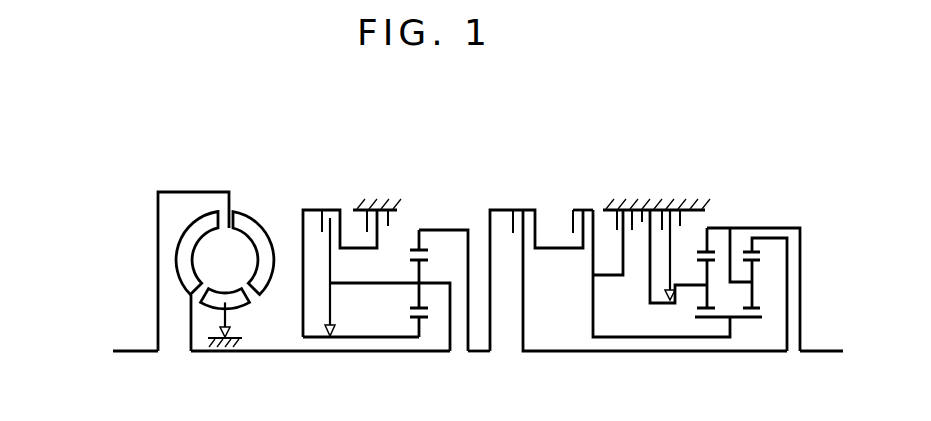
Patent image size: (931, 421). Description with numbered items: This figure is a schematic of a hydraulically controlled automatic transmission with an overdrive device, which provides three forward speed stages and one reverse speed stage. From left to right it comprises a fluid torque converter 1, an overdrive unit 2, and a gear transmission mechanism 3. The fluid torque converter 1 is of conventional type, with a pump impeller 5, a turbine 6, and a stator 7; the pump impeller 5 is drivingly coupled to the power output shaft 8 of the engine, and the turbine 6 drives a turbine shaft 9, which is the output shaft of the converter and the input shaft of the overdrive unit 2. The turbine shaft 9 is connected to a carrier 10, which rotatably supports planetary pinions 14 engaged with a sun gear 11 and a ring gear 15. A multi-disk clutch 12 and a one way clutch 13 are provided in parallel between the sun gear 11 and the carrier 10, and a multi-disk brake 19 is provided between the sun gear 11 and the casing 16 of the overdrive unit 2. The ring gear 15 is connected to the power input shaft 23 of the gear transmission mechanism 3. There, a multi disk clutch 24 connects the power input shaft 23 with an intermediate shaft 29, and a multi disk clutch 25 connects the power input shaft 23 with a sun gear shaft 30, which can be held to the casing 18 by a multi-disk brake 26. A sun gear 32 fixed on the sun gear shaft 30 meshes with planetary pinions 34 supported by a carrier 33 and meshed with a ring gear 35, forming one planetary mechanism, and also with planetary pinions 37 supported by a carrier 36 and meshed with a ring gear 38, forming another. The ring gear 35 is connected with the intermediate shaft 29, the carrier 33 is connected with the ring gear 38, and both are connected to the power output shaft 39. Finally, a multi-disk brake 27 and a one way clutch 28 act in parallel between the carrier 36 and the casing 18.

The fluid torque converter 1 is at (211, 182).
The overdrive unit 2 is at (398, 186).
The gear transmission mechanism 3 is at (673, 184).
The pump impeller 5 is at (259, 223).
The turbine 6 is at (194, 222).
The stator 7 is at (242, 309).
The power output shaft 8 is at (140, 350).
The turbine shaft 9 is at (357, 352).
The carrier 10 is at (438, 282).
The sun gear 11 is at (408, 313).
The multi-disk clutch 12 is at (323, 209).
The one way clutch 13 is at (332, 325).
The planetary pinions 14 is at (410, 260).
The ring gear 15 is at (410, 250).
The casing 16 is at (380, 204).
The casing 18 is at (617, 209).
The multi-disk brake 19 is at (393, 215).
The power input shaft 23 is at (475, 352).
The multi disk clutch 24 is at (523, 209).
The multi disk clutch 25 is at (580, 209).
The multi-disk brake 26 is at (643, 209).
The multi-disk brake 27 is at (684, 212).
The one way clutch 28 is at (667, 302).
The intermediate shaft 29 is at (584, 352).
The sun gear shaft 30 is at (592, 336).
The sun gear 32 is at (746, 319).
The carrier 33 is at (731, 240).
The planetary pinions 34 is at (758, 262).
The ring gear 35 is at (758, 248).
The carrier 36 is at (668, 250).
The planetary pinions 37 is at (702, 292).
The ring gear 38 is at (712, 249).
The power output shaft 39 is at (815, 352).